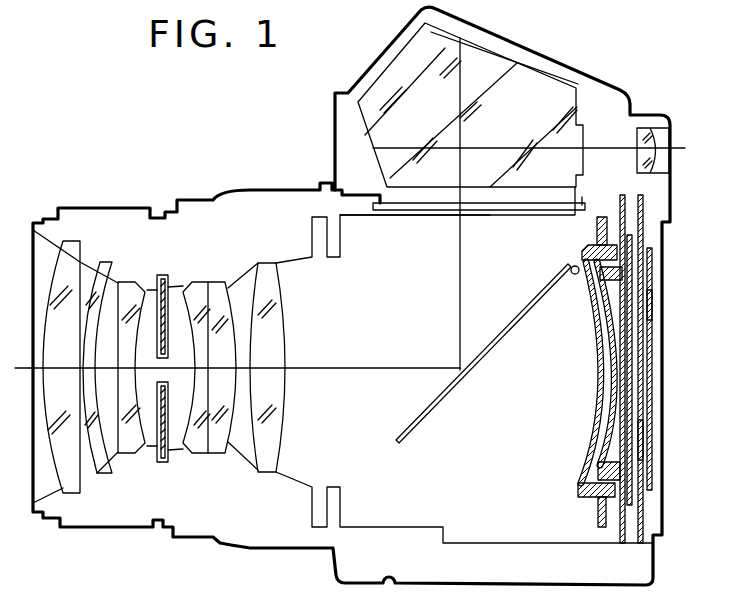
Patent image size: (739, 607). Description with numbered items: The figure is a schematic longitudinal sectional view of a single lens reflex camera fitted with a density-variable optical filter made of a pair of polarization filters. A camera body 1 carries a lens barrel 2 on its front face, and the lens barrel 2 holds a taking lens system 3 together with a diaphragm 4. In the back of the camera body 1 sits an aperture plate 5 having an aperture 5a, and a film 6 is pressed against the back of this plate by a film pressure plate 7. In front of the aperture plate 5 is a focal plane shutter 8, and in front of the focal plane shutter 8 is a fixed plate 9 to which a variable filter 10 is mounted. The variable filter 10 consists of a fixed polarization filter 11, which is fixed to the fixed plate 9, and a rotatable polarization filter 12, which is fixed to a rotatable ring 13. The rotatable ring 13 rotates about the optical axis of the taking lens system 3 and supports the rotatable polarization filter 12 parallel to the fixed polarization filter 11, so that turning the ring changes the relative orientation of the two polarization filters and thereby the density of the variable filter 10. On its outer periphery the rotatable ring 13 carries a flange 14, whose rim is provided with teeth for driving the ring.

The camera body 1 is at (626, 86).
The lens barrel 2 is at (152, 204).
The taking lens system 3 is at (52, 436).
The diaphragm 4 is at (161, 435).
The aperture plate 5 is at (643, 333).
The aperture 5a is at (643, 440).
The film 6 is at (652, 305).
The film pressure plate 7 is at (652, 262).
The focal plane shutter 8 is at (632, 243).
The fixed plate 9 is at (620, 213).
The variable filter 10 is at (576, 375).
The fixed polarization filter 11 is at (602, 329).
The rotatable polarization filter 12 is at (606, 374).
The rotatable ring 13 is at (583, 256).
The flange 14 is at (597, 230).